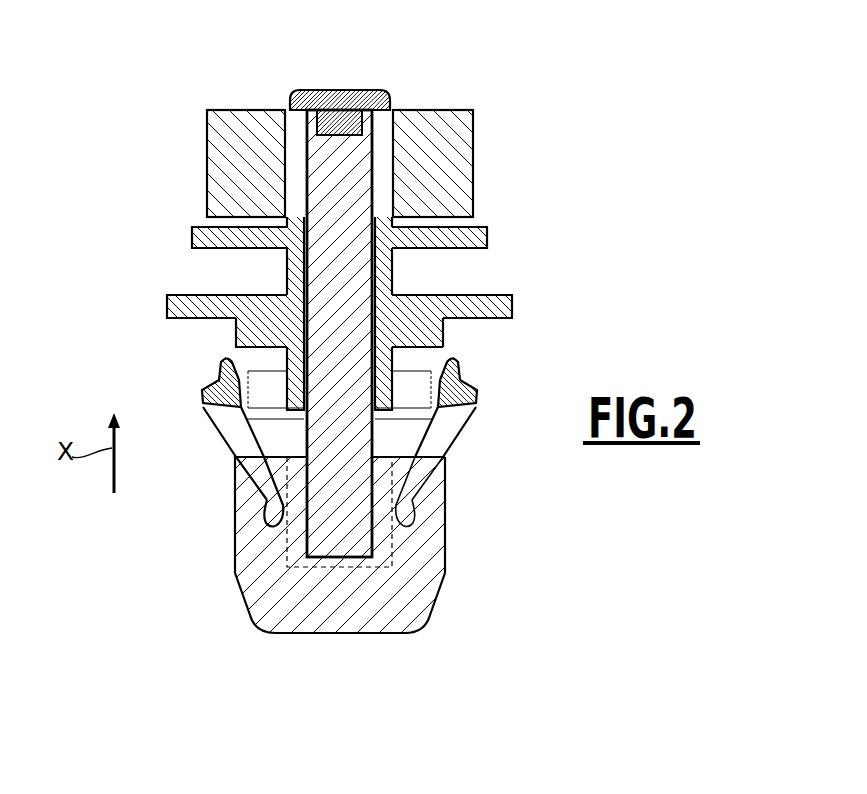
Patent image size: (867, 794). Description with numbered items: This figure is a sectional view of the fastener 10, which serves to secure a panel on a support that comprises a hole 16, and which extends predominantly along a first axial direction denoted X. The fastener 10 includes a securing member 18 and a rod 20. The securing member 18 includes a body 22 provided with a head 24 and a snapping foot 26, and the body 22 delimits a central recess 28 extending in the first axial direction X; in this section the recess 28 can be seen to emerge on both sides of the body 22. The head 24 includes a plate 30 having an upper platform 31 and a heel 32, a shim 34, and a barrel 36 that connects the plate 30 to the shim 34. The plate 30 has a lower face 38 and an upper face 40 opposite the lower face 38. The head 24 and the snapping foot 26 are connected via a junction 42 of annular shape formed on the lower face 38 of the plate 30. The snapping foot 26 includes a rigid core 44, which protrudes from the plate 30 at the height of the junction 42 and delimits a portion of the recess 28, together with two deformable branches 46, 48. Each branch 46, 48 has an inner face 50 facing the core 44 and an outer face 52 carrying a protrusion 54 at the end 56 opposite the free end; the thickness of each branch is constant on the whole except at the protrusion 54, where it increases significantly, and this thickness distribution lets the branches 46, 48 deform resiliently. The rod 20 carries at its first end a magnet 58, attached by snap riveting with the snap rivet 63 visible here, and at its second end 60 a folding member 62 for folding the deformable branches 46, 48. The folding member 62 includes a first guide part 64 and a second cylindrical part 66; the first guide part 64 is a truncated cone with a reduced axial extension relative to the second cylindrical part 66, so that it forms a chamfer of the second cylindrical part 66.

The fastener 10 is at (366, 351).
The hole 16 is at (322, 70).
The securing member 18 is at (366, 366).
The rod 20 is at (239, 6).
The body 22 is at (386, 244).
The head 24 is at (476, 225).
The snapping foot 26 is at (479, 456).
The central recess 28 is at (373, 74).
The plate 30 is at (226, 334).
The upper platform 31 is at (168, 306).
The heel 32 is at (237, 352).
The shim 34 is at (195, 238).
The barrel 36 is at (288, 270).
The lower face 38 is at (445, 322).
The upper face 40 is at (494, 290).
The junction 42 is at (398, 352).
The rigid core 44 is at (400, 522).
The deformable branch 46 is at (237, 427).
The deformable branch 48 is at (443, 455).
The inner face 50 is at (436, 360).
The outer face 52 is at (462, 412).
The protrusion 54 is at (472, 396).
The end 56 is at (462, 368).
The magnet 58 is at (235, 165).
The second end 60 is at (348, 580).
The folding member 62 is at (277, 573).
The snap rivet 63 is at (352, 90).
The first guide part 64 is at (318, 612).
The second cylindrical part 66 is at (417, 568).